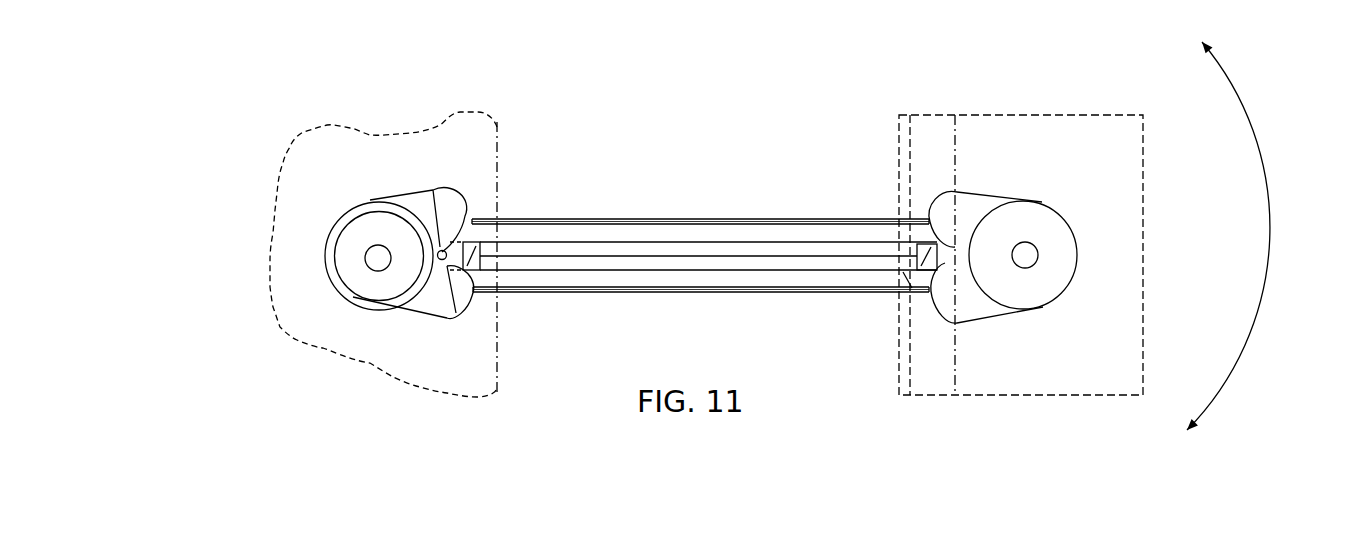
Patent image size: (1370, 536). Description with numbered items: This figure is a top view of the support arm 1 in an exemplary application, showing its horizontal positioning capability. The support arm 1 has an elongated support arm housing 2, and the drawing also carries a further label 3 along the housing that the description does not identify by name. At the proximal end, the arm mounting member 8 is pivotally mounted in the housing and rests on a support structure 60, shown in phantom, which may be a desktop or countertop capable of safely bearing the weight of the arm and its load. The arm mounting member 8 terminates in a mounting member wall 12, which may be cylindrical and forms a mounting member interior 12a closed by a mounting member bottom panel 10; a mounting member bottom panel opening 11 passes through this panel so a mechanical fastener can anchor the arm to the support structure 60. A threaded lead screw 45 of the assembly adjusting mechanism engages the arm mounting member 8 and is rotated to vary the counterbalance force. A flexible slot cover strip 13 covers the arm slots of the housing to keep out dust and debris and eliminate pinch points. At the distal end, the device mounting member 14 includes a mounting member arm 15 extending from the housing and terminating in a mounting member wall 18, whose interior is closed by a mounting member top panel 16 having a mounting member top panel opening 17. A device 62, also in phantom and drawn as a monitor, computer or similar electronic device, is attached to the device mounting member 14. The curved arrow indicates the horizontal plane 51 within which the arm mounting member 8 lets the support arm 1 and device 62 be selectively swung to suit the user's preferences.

The support arm 1 is at (577, 145).
The support arm housing 2 is at (682, 208).
The bar side rail 3 is at (782, 212).
The arm mounting member 8 is at (376, 195).
The mounting member bottom panel 10 is at (360, 285).
The mounting member bottom panel opening 11 is at (366, 250).
The mounting member wall 12 is at (333, 267).
The mounting member interior 12a is at (403, 278).
The flexible slot cover strip 13 is at (480, 318).
The device mounting member 14 is at (1050, 195).
The mounting member arm 15 is at (962, 322).
The mounting member top panel 16 is at (1053, 261).
The mounting member top panel opening 17 is at (1017, 263).
The mounting member wall 18 is at (1057, 303).
The threaded lead screw 45 is at (433, 200).
The horizontal plane 51 is at (1259, 184).
The support structure 60 is at (502, 117).
The device 62 is at (1048, 108).